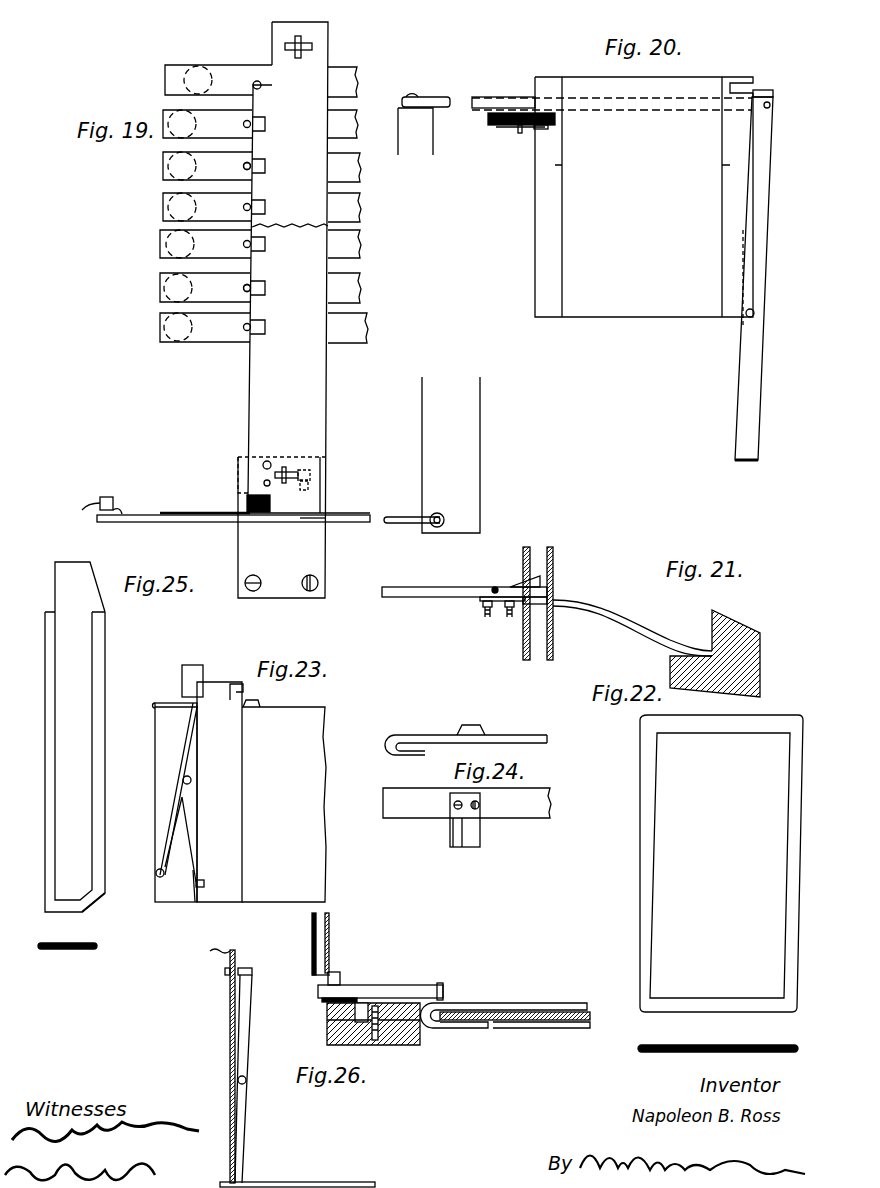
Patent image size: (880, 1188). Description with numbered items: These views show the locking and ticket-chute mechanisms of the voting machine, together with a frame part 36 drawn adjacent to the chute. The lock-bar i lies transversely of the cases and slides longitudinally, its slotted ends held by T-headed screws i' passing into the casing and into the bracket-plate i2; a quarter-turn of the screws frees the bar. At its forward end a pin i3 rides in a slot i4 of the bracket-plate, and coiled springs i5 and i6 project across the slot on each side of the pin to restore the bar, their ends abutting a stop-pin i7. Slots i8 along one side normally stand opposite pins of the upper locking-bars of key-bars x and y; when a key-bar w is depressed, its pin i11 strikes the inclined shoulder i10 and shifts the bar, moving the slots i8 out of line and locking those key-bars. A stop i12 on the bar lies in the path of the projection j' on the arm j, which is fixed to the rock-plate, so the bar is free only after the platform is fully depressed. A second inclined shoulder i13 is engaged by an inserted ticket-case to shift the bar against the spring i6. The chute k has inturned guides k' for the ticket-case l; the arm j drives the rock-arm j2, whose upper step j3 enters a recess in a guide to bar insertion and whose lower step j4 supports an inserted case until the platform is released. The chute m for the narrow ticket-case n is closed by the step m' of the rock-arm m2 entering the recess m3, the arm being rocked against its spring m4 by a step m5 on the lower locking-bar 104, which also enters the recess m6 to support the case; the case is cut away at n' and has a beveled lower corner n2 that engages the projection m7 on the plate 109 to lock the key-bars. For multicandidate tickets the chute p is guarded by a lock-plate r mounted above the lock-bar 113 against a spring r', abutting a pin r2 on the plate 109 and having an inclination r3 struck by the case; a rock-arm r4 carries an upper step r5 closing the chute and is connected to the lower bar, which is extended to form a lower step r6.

In FIG. 19, the lock-bar i is at (264, 310).
In FIG. 21, the lock-bar i is at (464, 584).
In FIG. 19, the T-headed screws i' is at (300, 256).
In FIG. 21, the T-headed screws i' is at (483, 581).
In FIG. 19, the bracket-plate i2 is at (281, 552).
In FIG. 21, the bracket-plate i2 is at (656, 645).
In FIG. 19, the pin i3 is at (300, 475).
In FIG. 19, the slot i4 is at (312, 470).
In FIG. 19, the coiled spring i5 is at (300, 490).
In FIG. 21, the coiled spring i5 is at (509, 616).
In FIG. 19, the coiled spring i6 is at (300, 476).
In FIG. 20, the coiled spring i6 is at (534, 128).
In FIG. 21, the coiled spring i6 is at (483, 606).
In FIG. 19, the stop-pin i7 is at (294, 476).
In FIG. 20, the stop-pin i7 is at (514, 127).
In FIG. 19, the slots i8 is at (261, 227).
In FIG. 19, the inclined shoulder i10 is at (261, 87).
In FIG. 19, the pin i11 is at (256, 81).
In FIG. 19, the stop i12 is at (325, 510).
In FIG. 19, the inclined shoulder i13 is at (252, 492).
In FIG. 21, the inclined shoulder i13 is at (523, 584).
In FIG. 19, the arm j is at (347, 528).
In FIG. 20, the arm j is at (500, 89).
In FIG. 19, the projection j' is at (312, 533).
In FIG. 20, the projection j' is at (521, 96).
In FIG. 19, the rock-arm j2 is at (90, 498).
In FIG. 20, the rock-arm j2 is at (760, 218).
In FIG. 20, the upper step j3 is at (760, 90).
In FIG. 20, the lower step j4 is at (752, 472).
In FIG. 19, the chute k is at (233, 507).
In FIG. 20, the chute k is at (612, 197).
In FIG. 21, the chute k is at (545, 603).
In FIG. 19, the inturned side guide k' is at (124, 496).
In FIG. 20, the inturned side guide k' is at (642, 159).
In FIG. 22, the ticket-case l is at (720, 883).
In FIG. 23, the chute m is at (198, 792).
In FIG. 23, the step m' is at (170, 697).
In FIG. 23, the rock-arm m2 is at (182, 760).
In FIG. 23, the recess m3 is at (200, 690).
In FIG. 23, the spring m4 is at (168, 828).
In FIG. 23, the step m5 is at (206, 800).
In FIG. 23, the recess m6 is at (200, 882).
In FIG. 23, the projection m7 is at (260, 695).
In FIG. 24, the projection m7 is at (486, 833).
In FIG. 25, the ticket-case n is at (71, 780).
In FIG. 25, the cut-away portion n' is at (85, 585).
In FIG. 25, the lower corner n2 is at (96, 903).
In FIG. 26, the chute p is at (329, 930).
In FIG. 26, the lock-plate r is at (380, 983).
In FIG. 26, the spring r' is at (328, 1011).
In FIG. 26, the pin r2 is at (445, 990).
In FIG. 26, the inclination r3 is at (340, 978).
In FIG. 26, the rock-arm r4 is at (250, 1004).
In FIG. 26, the step r5 is at (243, 968).
In FIG. 26, the lower step r6 is at (222, 1180).
In FIG. 19, the frame part 36 is at (432, 455).
In FIG. 20, the frame part 36 is at (424, 124).
In FIG. 26, the lower locking-bar 104 is at (297, 1175).
In FIG. 23, the plate 109 is at (284, 798).
In FIG. 24, the plate 109 is at (468, 776).
In FIG. 26, the plate 109 is at (506, 1004).
In FIG. 26, the lock-bar 113 is at (400, 1034).